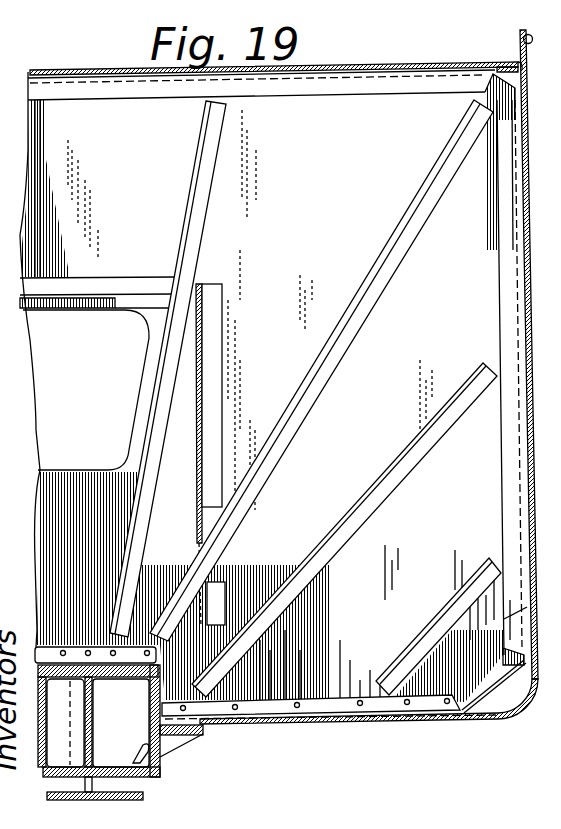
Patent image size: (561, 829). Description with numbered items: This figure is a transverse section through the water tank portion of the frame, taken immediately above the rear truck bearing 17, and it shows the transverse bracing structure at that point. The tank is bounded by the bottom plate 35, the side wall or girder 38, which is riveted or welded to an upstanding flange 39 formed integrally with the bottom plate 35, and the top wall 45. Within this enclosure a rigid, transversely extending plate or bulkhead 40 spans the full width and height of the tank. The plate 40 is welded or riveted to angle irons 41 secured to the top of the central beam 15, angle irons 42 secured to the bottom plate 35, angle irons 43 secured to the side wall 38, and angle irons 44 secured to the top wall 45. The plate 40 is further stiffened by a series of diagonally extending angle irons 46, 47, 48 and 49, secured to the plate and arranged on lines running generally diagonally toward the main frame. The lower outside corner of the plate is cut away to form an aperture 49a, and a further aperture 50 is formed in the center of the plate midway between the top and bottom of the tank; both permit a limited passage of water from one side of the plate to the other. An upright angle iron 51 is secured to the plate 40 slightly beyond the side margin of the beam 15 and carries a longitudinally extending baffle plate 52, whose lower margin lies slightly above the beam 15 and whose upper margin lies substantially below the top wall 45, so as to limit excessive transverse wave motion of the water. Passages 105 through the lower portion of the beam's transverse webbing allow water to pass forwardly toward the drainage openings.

The beam 15 is at (160, 758).
The rear truck bearing 17 is at (113, 802).
The bottom plate 35 is at (373, 722).
The side wall 38 is at (530, 272).
The upstanding flange 39 is at (520, 658).
The plate or bulkhead 40 is at (280, 183).
The angle iron 41 is at (82, 652).
The angle iron 42 is at (327, 706).
The angle iron 43 is at (507, 325).
The angle iron 44 is at (127, 83).
The top wall 45 is at (87, 70).
The diagonal angle iron 46 is at (213, 143).
The diagonal angle iron 47 is at (333, 355).
The diagonal angle iron 48 is at (390, 492).
The diagonal angle iron 49 is at (450, 610).
The aperture 49a is at (507, 698).
The aperture 50 is at (140, 375).
The upright angle iron 51 is at (212, 327).
The baffle plate 52 is at (202, 402).
The passage 105 is at (143, 753).